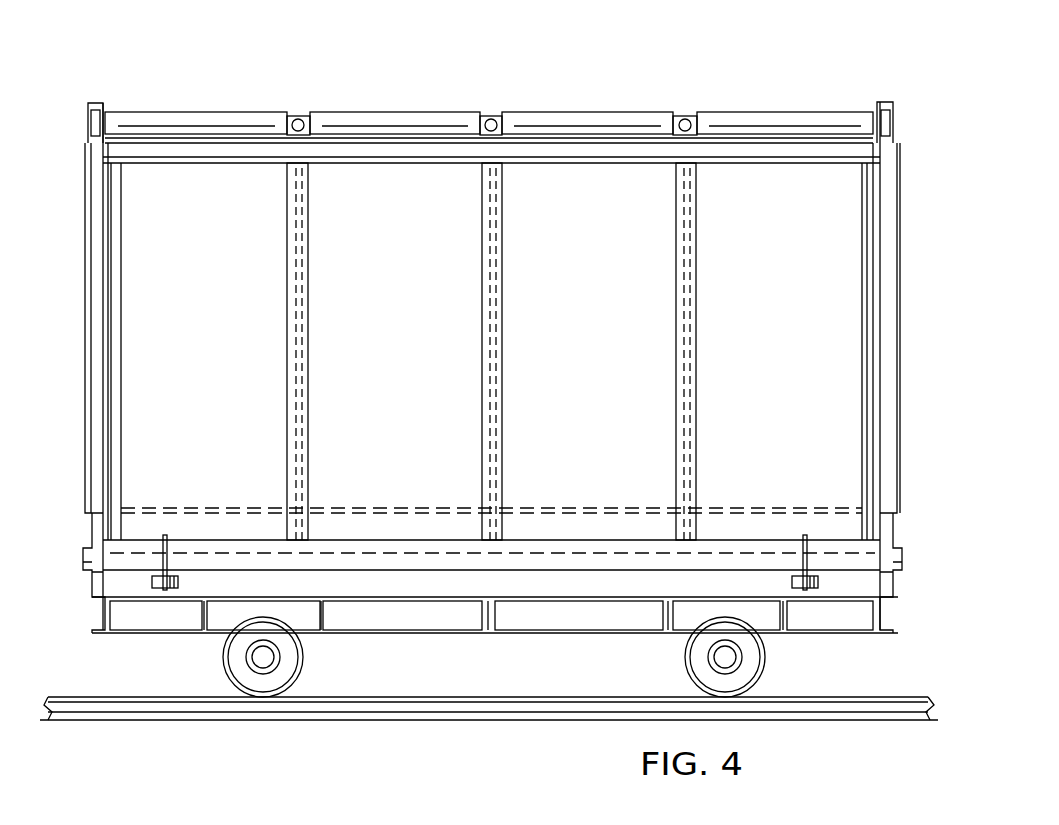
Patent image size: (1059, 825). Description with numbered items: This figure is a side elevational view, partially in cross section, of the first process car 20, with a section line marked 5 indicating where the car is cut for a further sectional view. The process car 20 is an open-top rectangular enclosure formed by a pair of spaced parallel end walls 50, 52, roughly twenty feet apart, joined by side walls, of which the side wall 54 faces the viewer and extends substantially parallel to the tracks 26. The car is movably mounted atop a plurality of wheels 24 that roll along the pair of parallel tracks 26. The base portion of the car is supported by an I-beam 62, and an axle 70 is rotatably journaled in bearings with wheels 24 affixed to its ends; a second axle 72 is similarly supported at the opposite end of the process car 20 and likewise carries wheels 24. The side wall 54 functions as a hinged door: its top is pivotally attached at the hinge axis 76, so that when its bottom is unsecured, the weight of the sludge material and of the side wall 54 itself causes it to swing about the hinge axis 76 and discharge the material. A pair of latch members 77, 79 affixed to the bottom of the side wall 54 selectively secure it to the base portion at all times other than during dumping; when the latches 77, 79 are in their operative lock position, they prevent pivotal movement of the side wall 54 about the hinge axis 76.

The section line 5- 5 is at (547, 65).
The process car 20 is at (729, 88).
The wheels 24 is at (224, 657).
The tracks 26 is at (95, 697).
The end wall 50 is at (85, 368).
The end wall 52 is at (900, 380).
The side wall 54 is at (416, 304).
The I-beam 62 is at (455, 636).
The axle 70 is at (280, 657).
The second axle 72 is at (718, 657).
The hinge axis 76 is at (810, 112).
The latch member 77 is at (172, 545).
The latch member 79 is at (803, 560).